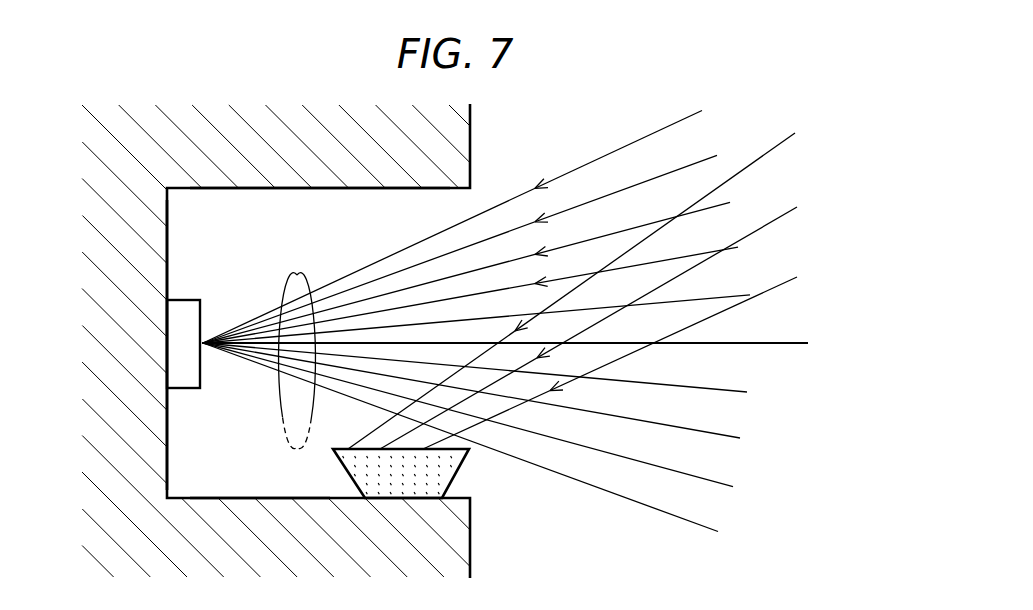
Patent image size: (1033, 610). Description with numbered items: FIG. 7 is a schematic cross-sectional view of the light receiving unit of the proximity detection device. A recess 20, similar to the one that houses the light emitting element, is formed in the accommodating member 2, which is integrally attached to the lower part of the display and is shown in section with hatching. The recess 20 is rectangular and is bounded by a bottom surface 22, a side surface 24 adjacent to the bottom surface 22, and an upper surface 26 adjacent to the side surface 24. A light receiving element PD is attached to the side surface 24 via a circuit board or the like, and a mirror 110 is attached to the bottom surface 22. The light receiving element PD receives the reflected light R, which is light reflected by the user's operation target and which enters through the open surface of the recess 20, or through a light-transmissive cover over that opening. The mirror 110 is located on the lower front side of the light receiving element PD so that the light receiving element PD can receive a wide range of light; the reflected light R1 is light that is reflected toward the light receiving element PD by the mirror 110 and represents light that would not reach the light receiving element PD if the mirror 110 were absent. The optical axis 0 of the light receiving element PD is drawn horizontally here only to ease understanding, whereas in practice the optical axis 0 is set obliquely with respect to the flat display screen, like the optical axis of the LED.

The accommodating member 2 is at (470, 140).
The recess 20 is at (378, 235).
The upper surface 26 is at (251, 189).
The side surface 24 is at (168, 437).
The bottom surface 22 is at (244, 497).
The light receiving element PD is at (185, 299).
The reflected light R is at (298, 276).
The optical axis 0 is at (515, 344).
The reflected light R1 is at (800, 123).
The mirror 110 is at (458, 476).